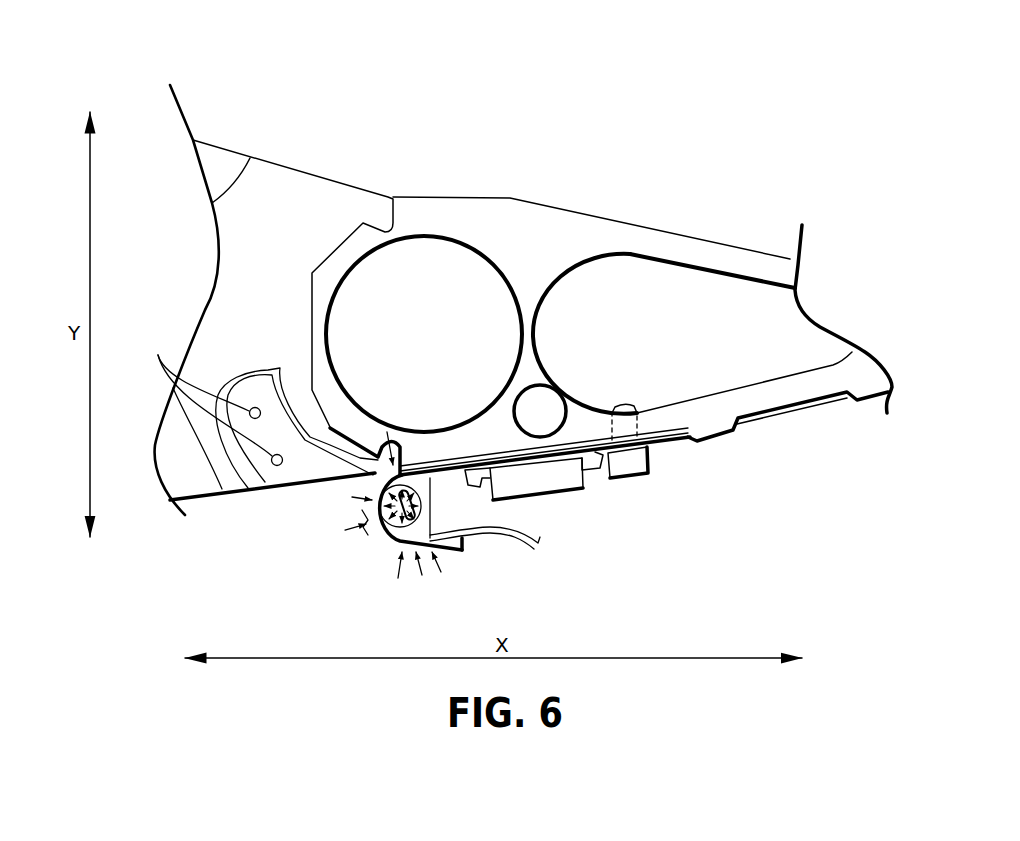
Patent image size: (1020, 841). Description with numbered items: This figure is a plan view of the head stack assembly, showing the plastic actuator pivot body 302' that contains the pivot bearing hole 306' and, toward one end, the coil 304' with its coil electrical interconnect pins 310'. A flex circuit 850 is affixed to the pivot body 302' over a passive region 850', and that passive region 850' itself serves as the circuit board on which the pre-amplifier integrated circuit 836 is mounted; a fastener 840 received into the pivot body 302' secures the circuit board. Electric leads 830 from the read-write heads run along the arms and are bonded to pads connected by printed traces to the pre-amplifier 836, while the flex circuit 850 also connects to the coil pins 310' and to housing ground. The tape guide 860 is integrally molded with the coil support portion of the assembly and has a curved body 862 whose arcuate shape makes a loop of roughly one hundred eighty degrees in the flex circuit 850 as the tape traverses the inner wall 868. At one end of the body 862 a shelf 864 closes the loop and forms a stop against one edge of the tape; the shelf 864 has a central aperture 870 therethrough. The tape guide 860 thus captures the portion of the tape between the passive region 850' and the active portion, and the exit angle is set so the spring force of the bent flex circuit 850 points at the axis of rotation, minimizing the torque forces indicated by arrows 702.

The actuator pivot body 302' is at (523, 300).
The coil 304' is at (247, 151).
The pivot bearing hole 306' is at (481, 336).
The coil electrical interconnect pins 310' is at (202, 393).
The electric leads 830 is at (767, 413).
The pre-amplifier integrated circuit 836 is at (555, 492).
The fastener 840 is at (640, 478).
The flex circuit 850 is at (404, 435).
The passive region of flex circuit 850' is at (545, 451).
The tape guide 860 is at (410, 560).
The curved body 862 is at (372, 528).
The shelf 864 is at (453, 553).
The inner wall 868 is at (368, 507).
The central aperture 870 is at (427, 498).
The arrows 702 is at (387, 543).